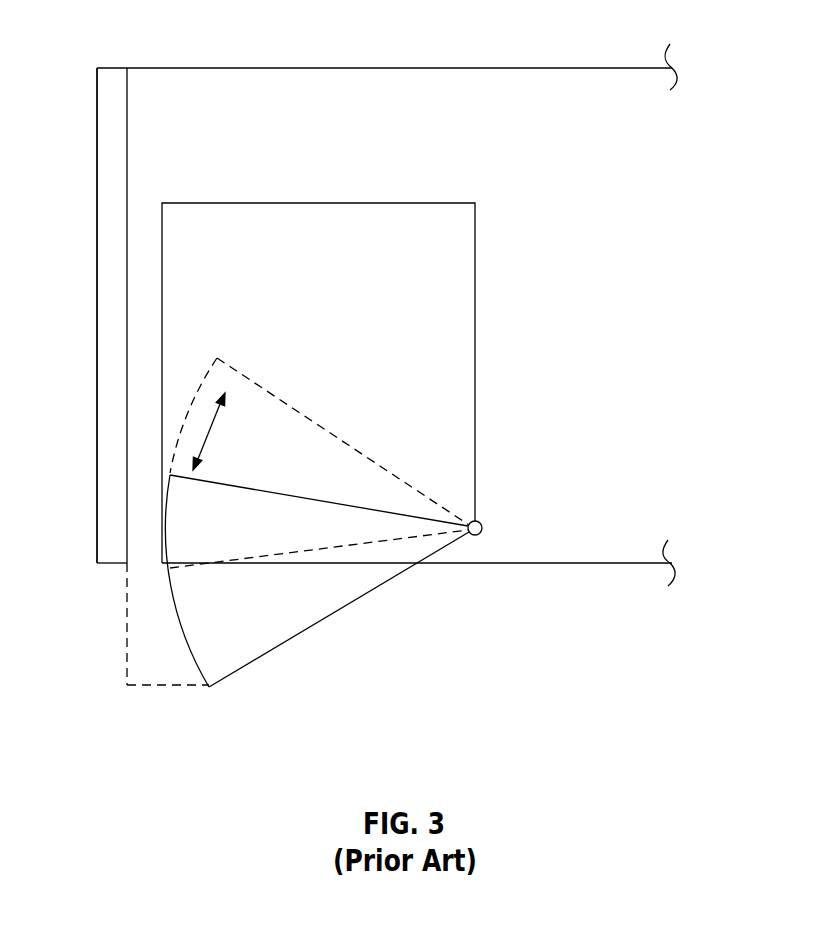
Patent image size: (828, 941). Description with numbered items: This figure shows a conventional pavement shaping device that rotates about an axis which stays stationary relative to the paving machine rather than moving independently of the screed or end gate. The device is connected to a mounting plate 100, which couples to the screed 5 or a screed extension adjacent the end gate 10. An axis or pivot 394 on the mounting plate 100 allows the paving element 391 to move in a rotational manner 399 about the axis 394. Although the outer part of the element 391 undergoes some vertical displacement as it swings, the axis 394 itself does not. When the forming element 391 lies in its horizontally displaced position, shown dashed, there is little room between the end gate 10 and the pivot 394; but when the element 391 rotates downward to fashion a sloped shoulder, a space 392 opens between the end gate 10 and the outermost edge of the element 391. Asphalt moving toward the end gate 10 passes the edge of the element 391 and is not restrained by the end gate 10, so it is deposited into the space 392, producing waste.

The screed 5 is at (573, 87).
The end gate 10 is at (110, 290).
The mounting plate 100 is at (457, 327).
The paving element 391 is at (290, 627).
The space 392 is at (152, 675).
The axis or pivot 394 is at (481, 523).
The rotational manner 399 is at (208, 432).